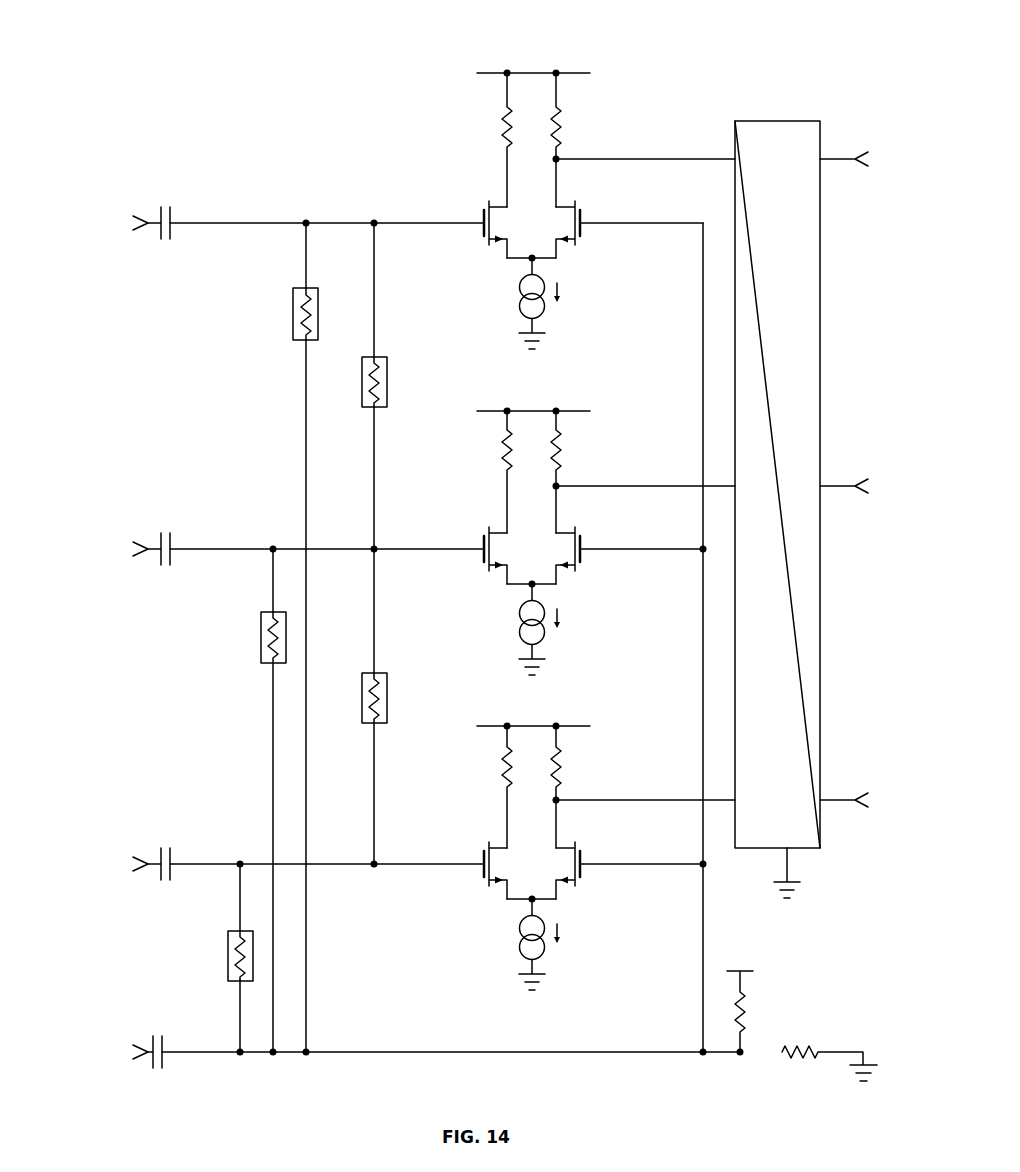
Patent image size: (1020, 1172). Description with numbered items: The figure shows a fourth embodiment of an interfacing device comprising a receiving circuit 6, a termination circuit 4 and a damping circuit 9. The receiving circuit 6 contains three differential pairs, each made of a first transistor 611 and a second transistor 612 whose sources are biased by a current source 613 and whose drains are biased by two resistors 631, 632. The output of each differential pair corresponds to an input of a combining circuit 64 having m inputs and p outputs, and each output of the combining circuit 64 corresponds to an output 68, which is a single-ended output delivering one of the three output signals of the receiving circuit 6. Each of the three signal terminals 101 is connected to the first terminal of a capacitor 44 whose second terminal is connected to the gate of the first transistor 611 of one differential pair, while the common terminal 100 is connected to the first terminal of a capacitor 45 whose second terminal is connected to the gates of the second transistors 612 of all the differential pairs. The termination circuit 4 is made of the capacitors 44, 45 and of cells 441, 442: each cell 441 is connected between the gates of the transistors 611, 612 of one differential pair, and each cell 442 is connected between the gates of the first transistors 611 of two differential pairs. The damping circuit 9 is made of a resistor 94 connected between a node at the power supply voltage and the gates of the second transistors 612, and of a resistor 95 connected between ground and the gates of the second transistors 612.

The termination circuit 4 is at (285, 175).
The receiving circuit 6 is at (352, 66).
The damping circuit 9 is at (839, 949).
The capacitor 44 is at (164, 190).
The capacitor 45 is at (151, 1025).
The combining circuit 64 is at (782, 95).
The output 68 is at (863, 150).
The resistor 94 is at (756, 1020).
The resistor 95 is at (811, 1041).
The common terminal 100 is at (124, 1051).
The signal terminal 101 is at (128, 222).
The cell 441 is at (292, 313).
The cell 442 is at (396, 374).
The first transistor 611 is at (469, 203).
The second transistor 612 is at (598, 234).
The current source 613 is at (575, 304).
The resistor 631 is at (578, 127).
The resistor 632 is at (493, 126).